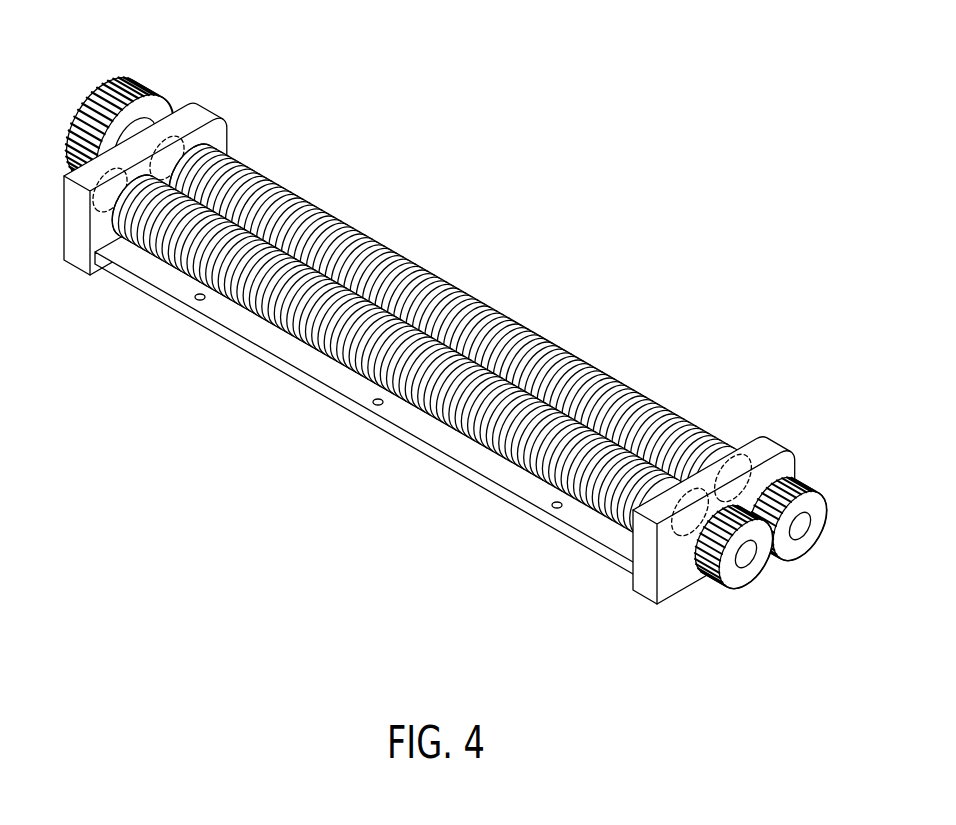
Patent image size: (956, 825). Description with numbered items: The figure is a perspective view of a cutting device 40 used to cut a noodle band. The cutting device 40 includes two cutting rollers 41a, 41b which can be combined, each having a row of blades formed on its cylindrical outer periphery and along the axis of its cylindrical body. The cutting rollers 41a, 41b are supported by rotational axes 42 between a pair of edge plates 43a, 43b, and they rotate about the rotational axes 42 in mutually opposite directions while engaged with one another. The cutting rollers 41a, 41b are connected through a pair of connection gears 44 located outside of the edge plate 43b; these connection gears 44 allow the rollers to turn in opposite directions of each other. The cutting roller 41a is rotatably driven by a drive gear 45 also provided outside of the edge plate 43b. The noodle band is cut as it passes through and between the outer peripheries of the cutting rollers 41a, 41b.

The cutting device 40 is at (430, 245).
The cutting roller 41a is at (520, 323).
The cutting roller 41b is at (480, 423).
The rotational axis 42 is at (175, 135).
The edge plate 43a is at (645, 580).
The edge plate 43b is at (78, 250).
The connection gear 44 is at (752, 589).
The drive gear 45 is at (136, 82).